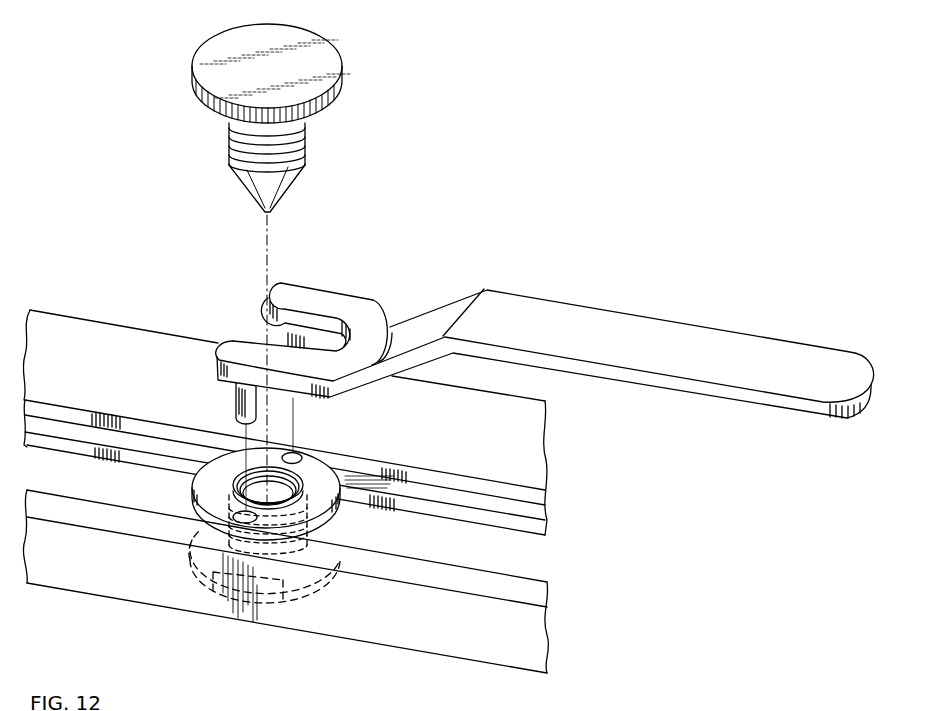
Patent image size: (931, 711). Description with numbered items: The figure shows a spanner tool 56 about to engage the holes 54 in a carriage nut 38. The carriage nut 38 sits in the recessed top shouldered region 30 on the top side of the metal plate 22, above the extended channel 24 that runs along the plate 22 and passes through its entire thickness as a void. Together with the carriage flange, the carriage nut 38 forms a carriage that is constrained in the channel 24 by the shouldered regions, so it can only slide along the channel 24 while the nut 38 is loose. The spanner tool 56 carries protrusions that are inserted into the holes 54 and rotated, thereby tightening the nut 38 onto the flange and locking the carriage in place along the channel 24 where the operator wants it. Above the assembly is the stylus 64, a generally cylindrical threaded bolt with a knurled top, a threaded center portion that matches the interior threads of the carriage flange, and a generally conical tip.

The metal plate 22 is at (108, 350).
The extended channel 24 is at (397, 535).
The recessed top shouldered region 30 is at (458, 498).
The carriage nut 38 is at (333, 500).
The holes 54 is at (300, 452).
The spanner tool 56 is at (687, 300).
The stylus 64 is at (347, 78).